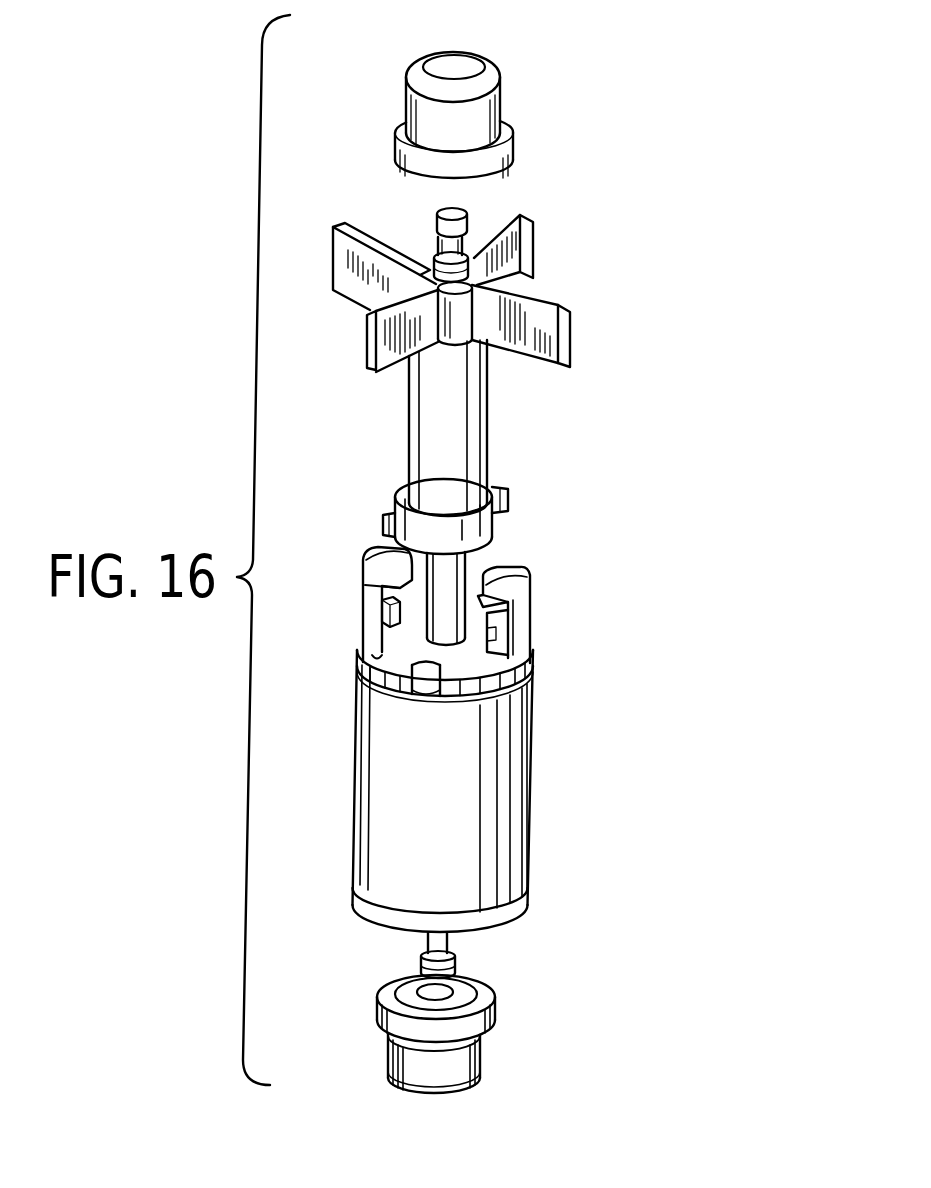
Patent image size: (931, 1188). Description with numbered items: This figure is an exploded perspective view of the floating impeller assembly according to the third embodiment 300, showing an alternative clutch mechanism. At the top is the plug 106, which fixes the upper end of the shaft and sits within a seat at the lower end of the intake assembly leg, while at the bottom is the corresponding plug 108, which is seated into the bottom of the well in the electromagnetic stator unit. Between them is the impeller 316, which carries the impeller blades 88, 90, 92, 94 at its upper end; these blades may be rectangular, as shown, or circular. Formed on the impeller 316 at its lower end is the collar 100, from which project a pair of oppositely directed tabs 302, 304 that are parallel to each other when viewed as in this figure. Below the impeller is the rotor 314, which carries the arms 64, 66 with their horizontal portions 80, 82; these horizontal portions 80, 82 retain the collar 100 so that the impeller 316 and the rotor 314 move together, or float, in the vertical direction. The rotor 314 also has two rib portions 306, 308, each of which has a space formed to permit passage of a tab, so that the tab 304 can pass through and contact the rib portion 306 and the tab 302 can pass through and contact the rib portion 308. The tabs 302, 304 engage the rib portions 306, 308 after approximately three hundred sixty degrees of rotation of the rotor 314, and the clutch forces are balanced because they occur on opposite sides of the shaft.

The plug 106 is at (503, 104).
The impeller blade 88 is at (362, 235).
The impeller blade 90 is at (532, 243).
The impeller blade 92 is at (367, 357).
The impeller blade 94 is at (572, 332).
The impeller 316 is at (489, 402).
The tab 304 is at (507, 490).
The tab 302 is at (383, 518).
The collar 100 is at (493, 528).
The horizontal portion 80 is at (370, 557).
The horizontal portion 82 is at (517, 573).
The arm 64 is at (370, 595).
The arm 66 is at (530, 620).
The rib portion 308 is at (380, 623).
The rib portion 306 is at (500, 663).
The rotor 314 is at (530, 820).
The third embodiment 300 is at (446, 759).
The plug 108 is at (481, 1050).